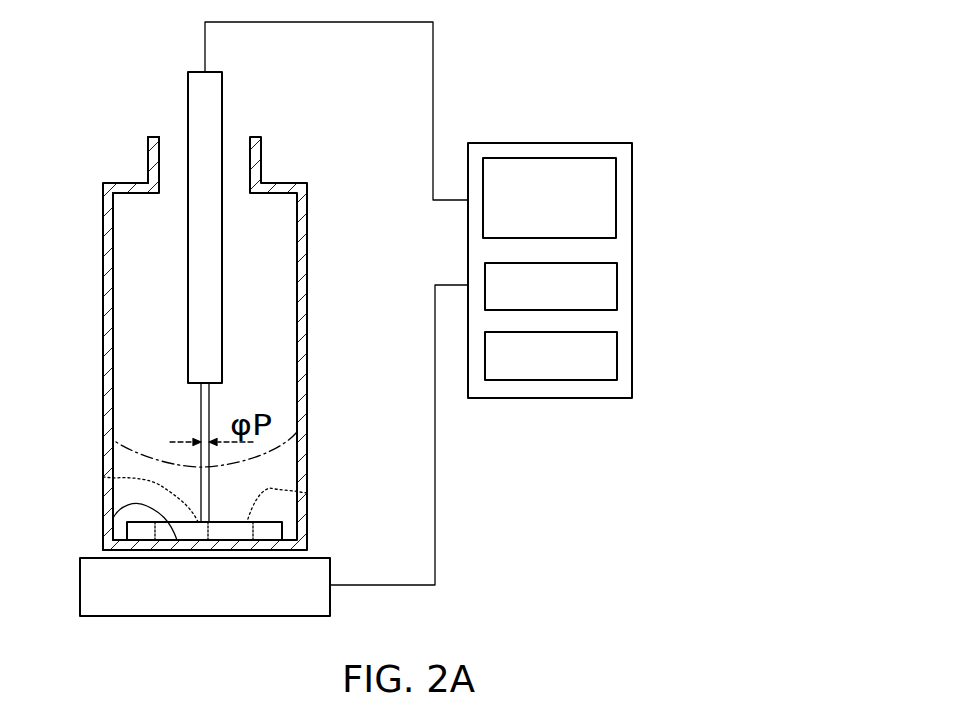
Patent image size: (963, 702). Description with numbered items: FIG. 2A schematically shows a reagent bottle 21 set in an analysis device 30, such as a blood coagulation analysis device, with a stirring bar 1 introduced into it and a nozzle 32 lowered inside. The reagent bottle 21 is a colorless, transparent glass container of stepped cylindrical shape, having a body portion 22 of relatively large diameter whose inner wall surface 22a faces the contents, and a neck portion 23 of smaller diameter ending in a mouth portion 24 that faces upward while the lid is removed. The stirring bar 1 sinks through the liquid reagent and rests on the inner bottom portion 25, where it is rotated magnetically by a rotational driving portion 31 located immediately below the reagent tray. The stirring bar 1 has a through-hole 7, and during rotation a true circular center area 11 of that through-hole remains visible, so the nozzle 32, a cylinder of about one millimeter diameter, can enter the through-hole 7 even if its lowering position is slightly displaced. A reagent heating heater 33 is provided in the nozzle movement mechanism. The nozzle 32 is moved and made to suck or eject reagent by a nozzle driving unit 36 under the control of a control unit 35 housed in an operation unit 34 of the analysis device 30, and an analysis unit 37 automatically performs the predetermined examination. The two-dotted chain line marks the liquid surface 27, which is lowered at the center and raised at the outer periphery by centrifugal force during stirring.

The stirring bar 1 is at (285, 530).
The through-hole 7 is at (307, 493).
The center area of the through-hole 11 is at (103, 477).
The reagent bottle 21 is at (273, 143).
The body portion 22 is at (102, 408).
The inner surface of side wall 22a is at (113, 353).
The neck portion 23 is at (147, 160).
The mouth portion 24 is at (175, 140).
The inner bottom portion 25 is at (113, 518).
The liquid surface 27 is at (297, 432).
The analysis device 30 is at (478, 76).
The rotational driving portion 31 is at (330, 573).
The nozzle 32 is at (210, 485).
The reagent heating heater 33 is at (207, 98).
The operation unit 34 is at (588, 143).
The control unit 35 is at (617, 285).
The nozzle driving unit 36 is at (616, 195).
The analysis unit 37 is at (617, 355).